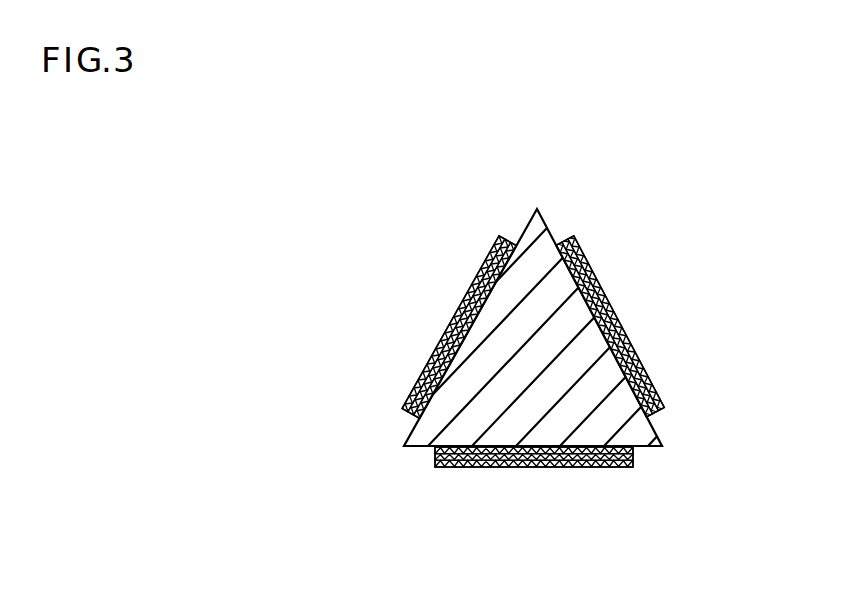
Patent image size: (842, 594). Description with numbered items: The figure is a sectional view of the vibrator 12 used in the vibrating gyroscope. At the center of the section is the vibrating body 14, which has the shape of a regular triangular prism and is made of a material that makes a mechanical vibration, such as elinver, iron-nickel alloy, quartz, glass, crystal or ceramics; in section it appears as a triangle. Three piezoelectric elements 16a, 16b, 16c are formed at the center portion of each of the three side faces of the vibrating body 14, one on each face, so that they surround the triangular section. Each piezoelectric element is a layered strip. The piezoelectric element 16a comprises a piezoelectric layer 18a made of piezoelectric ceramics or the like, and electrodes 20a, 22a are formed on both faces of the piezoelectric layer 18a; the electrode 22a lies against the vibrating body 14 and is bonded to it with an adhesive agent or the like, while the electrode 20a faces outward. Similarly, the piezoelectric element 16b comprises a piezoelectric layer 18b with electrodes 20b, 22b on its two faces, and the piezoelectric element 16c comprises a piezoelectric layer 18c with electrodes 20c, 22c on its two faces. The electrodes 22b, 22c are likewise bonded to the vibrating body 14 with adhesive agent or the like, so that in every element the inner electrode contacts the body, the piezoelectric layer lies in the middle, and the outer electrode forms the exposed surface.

The vibrator 12 is at (320, 157).
The vibrating body 14 is at (634, 423).
The piezoelectric element 16a is at (582, 237).
The piezoelectric element 16b is at (490, 238).
The piezoelectric element 16c is at (616, 472).
The piezoelectric layer 18a is at (622, 316).
The piezoelectric layer 18b is at (452, 326).
The piezoelectric layer 18c is at (497, 463).
The electrode 20a is at (600, 278).
The electrode 20b is at (467, 282).
The electrode 20c is at (453, 465).
The electrode 22a is at (643, 363).
The electrode 22b is at (422, 367).
The electrode 22c is at (553, 462).